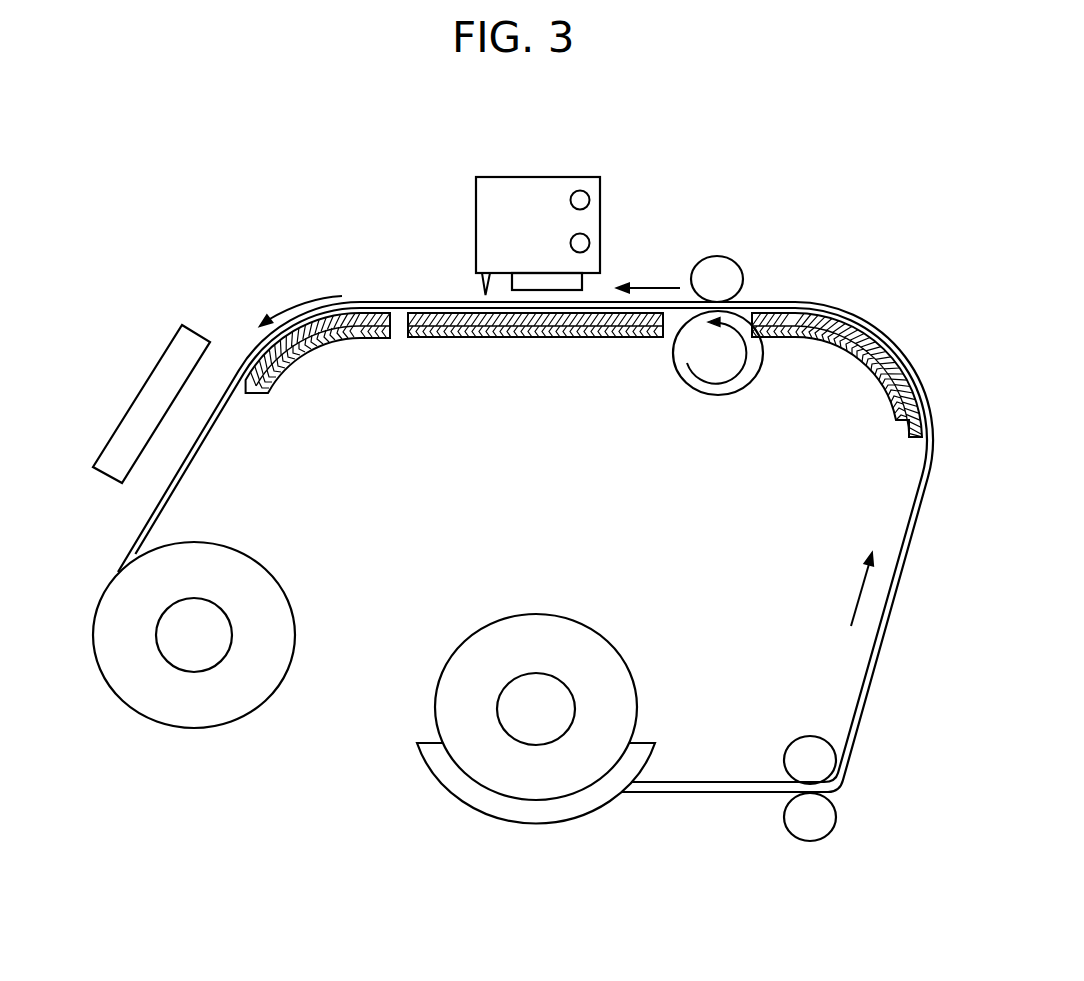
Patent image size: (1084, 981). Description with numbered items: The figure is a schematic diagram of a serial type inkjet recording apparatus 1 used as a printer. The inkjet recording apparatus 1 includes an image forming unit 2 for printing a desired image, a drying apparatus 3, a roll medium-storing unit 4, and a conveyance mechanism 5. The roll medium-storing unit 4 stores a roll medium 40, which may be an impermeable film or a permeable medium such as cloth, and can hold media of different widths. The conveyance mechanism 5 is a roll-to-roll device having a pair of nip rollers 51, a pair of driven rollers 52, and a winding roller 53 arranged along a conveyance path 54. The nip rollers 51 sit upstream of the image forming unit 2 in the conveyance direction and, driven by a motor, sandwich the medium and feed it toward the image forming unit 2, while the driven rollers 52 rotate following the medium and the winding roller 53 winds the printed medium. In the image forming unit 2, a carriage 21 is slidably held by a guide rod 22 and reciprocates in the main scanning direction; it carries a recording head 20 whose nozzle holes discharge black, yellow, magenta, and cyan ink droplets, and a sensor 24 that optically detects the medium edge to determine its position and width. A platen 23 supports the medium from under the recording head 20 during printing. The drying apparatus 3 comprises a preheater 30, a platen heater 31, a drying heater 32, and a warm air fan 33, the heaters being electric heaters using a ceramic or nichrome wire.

The inkjet recording apparatus 1 is at (843, 156).
The image forming unit 2 is at (463, 157).
The drying apparatus 3 is at (410, 422).
The roll medium-storing unit 4 is at (664, 684).
The conveyance mechanism 5 is at (770, 272).
The recording head 20 is at (535, 282).
The carriage 21 is at (536, 195).
The guide rod 22 is at (590, 200).
The platen 23 is at (555, 338).
The sensor 24 is at (484, 288).
The preheater 30 is at (866, 364).
The platen heater 31 is at (528, 338).
The drying heater 32 is at (298, 352).
The warm air fan 33 is at (150, 390).
The roll medium 40 is at (536, 615).
The nip rollers 51 is at (690, 346).
The driven rollers 52 is at (810, 762).
The winding roller 53 is at (167, 627).
The conveyance path 54 is at (888, 603).